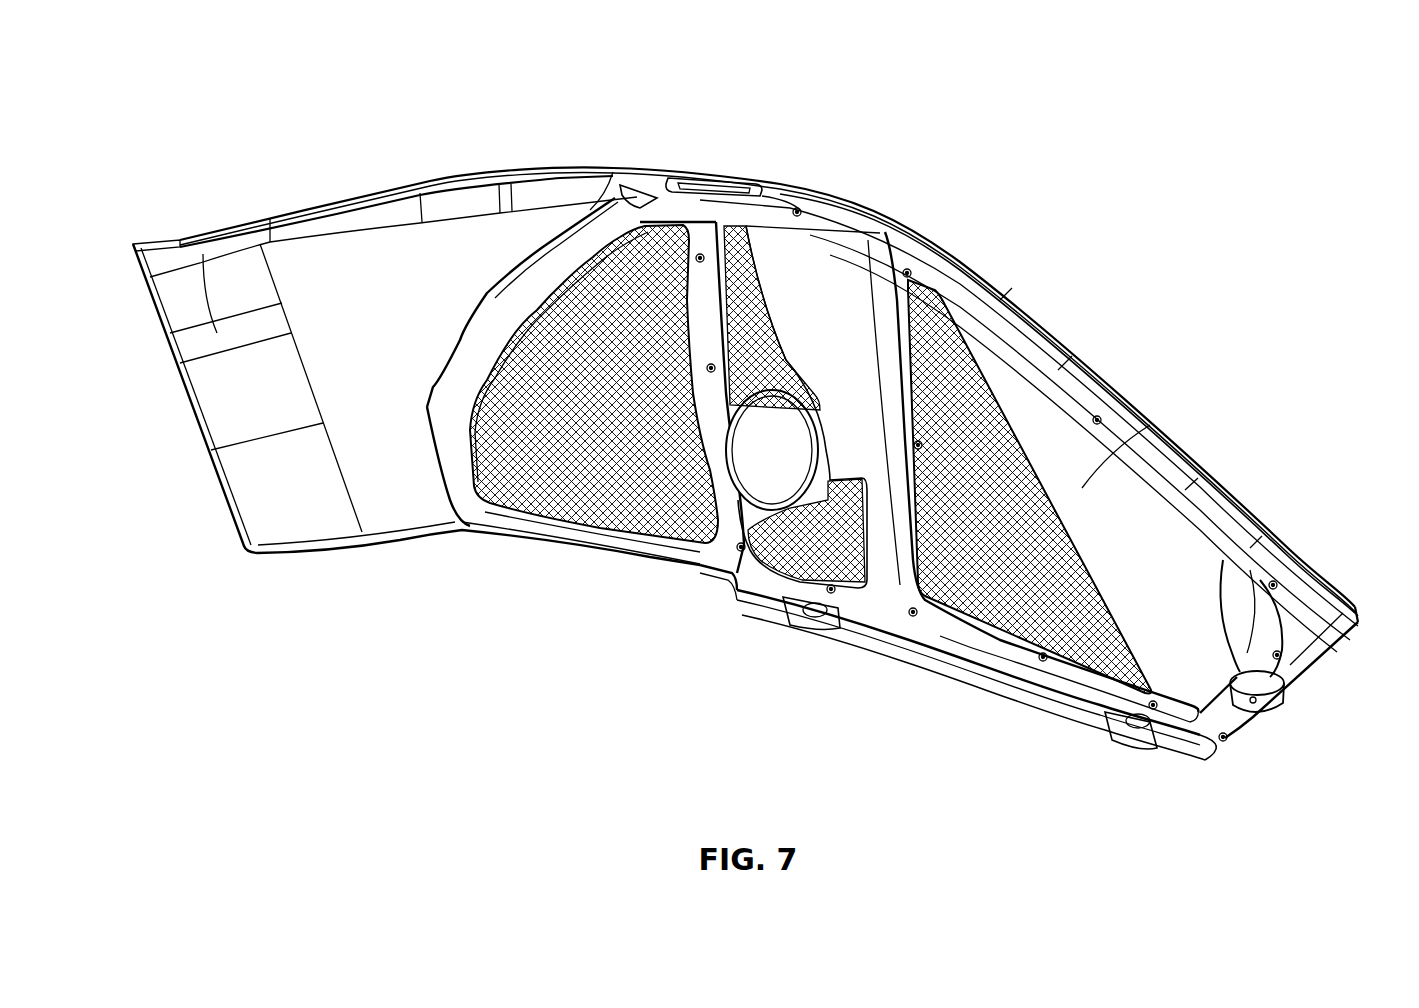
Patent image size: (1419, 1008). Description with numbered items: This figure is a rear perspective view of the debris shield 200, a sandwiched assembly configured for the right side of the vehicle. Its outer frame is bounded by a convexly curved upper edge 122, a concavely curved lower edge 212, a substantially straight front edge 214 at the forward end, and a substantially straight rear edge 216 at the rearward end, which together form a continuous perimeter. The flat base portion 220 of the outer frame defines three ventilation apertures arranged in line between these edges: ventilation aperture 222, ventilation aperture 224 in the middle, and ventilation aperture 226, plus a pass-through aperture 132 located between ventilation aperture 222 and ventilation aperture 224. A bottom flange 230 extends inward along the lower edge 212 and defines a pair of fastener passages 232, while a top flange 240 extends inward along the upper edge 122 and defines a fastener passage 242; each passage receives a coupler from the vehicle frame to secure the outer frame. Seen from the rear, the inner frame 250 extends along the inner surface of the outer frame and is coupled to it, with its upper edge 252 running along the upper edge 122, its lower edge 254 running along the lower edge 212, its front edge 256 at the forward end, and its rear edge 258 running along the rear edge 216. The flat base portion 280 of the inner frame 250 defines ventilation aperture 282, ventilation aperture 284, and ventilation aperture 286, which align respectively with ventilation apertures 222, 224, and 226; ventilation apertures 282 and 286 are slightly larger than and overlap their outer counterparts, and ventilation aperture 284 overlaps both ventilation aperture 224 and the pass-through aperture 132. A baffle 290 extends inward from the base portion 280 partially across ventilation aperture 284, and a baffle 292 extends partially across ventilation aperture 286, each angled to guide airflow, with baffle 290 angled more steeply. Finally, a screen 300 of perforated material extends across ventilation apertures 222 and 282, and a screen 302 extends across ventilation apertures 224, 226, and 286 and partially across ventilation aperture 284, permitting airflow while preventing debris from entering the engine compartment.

The debris shield 200 is at (1246, 80).
The upper edge 122 is at (415, 184).
The base portion 220 is at (232, 391).
The front edge 214 is at (215, 470).
The lower edge 212 is at (393, 548).
The front edge 256 is at (517, 263).
The screen 300 is at (497, 517).
The ventilation aperture 222 is at (618, 515).
The ventilation aperture 282 is at (550, 512).
The pass-through aperture 132 is at (700, 548).
The ventilation aperture 224 is at (810, 213).
The fastener passage 232 is at (750, 178).
The bottom flange 230 is at (588, 170).
The inner frame 250 is at (863, 230).
The ventilation aperture 226 is at (963, 270).
The baffle 290 is at (910, 233).
The upper edge 252 is at (1107, 393).
The baffle 292 is at (1080, 490).
The screen 302 is at (997, 660).
The ventilation aperture 286 is at (1080, 663).
The lower edge 254 is at (887, 619).
The ventilation aperture 284 is at (760, 590).
The top flange 240 is at (950, 660).
The fastener passage 242 is at (817, 627).
The rear edge 216 is at (1332, 658).
The rear edge 258 is at (1290, 682).
The base portion 280 is at (1240, 548).